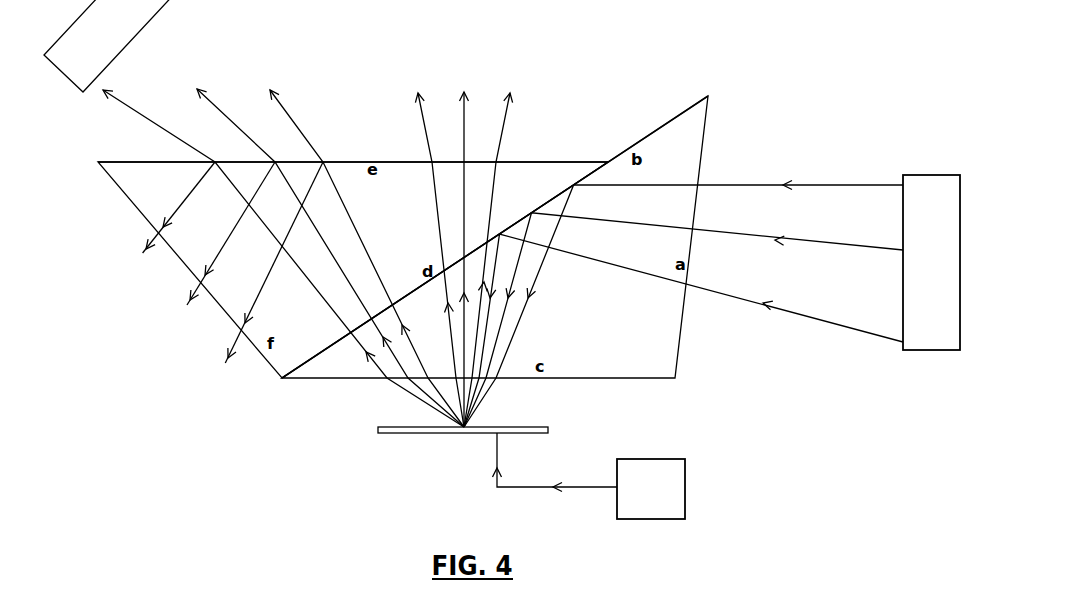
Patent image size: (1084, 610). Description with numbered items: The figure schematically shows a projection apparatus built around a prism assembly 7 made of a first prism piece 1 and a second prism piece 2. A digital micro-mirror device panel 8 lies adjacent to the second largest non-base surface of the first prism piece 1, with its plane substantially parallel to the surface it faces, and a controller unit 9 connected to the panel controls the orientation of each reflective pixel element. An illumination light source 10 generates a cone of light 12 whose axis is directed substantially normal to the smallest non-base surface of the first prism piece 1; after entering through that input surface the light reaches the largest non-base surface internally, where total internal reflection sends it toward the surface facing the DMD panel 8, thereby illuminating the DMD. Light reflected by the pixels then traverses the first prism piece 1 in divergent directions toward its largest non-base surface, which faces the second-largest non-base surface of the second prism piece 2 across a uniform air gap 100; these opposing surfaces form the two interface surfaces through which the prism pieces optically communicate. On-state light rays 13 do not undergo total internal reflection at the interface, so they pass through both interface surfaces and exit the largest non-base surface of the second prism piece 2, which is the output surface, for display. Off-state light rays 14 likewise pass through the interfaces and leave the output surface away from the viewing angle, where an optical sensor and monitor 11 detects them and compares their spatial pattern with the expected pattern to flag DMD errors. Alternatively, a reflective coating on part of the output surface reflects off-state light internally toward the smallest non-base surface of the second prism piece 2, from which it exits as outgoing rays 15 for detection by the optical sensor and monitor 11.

The first prism piece 1 is at (571, 349).
The second prism piece 2 is at (386, 244).
The prism assembly 7 is at (619, 74).
The digital micro-mirror device panel 8 is at (402, 434).
The controller unit 9 is at (645, 506).
The illumination light source 10 is at (920, 273).
The optical sensor and monitor 11 is at (118, 46).
The cone of light 12 is at (742, 287).
The on-state light rays 13 is at (461, 219).
The off-state light rays 14 is at (283, 229).
The outgoing rays 15 is at (229, 262).
The air gap 100 is at (325, 364).